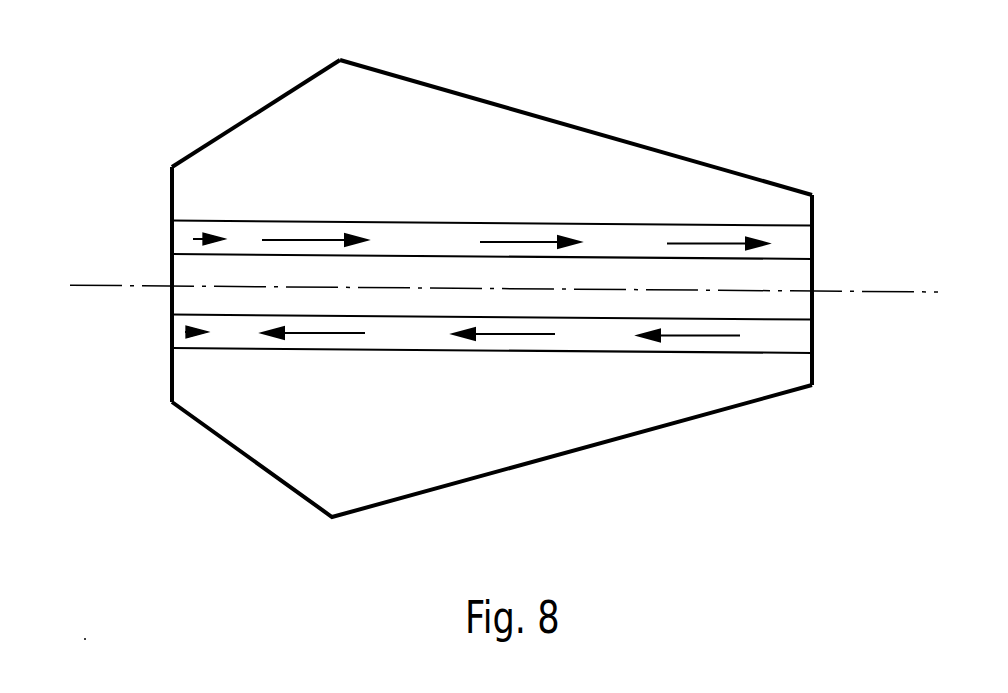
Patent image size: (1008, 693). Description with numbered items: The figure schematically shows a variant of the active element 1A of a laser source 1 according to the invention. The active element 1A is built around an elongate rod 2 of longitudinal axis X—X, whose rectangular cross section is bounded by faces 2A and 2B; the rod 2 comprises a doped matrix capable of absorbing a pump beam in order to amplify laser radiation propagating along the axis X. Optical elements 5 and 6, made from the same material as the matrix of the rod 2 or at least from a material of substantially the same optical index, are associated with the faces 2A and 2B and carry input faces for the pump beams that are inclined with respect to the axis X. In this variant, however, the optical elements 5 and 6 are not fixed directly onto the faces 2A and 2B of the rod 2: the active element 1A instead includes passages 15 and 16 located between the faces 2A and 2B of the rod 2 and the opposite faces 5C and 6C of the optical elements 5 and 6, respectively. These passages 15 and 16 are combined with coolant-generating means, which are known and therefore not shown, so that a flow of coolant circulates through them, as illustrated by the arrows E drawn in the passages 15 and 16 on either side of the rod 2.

The laser source 1 is at (645, 112).
The active element 1A is at (220, 133).
The elongate rod 2 is at (785, 291).
The face of the rod 2A is at (613, 236).
The face of the rod 2B is at (757, 341).
The optical element 5 is at (760, 195).
The face of the optical element 5C is at (288, 200).
The optical element 6 is at (608, 428).
The face of the optical element 6C is at (385, 372).
The passage 15 is at (193, 239).
The passage 16 is at (185, 332).
The arrows indicating coolant flow E is at (323, 240).
The longitudinal axis X is at (507, 262).